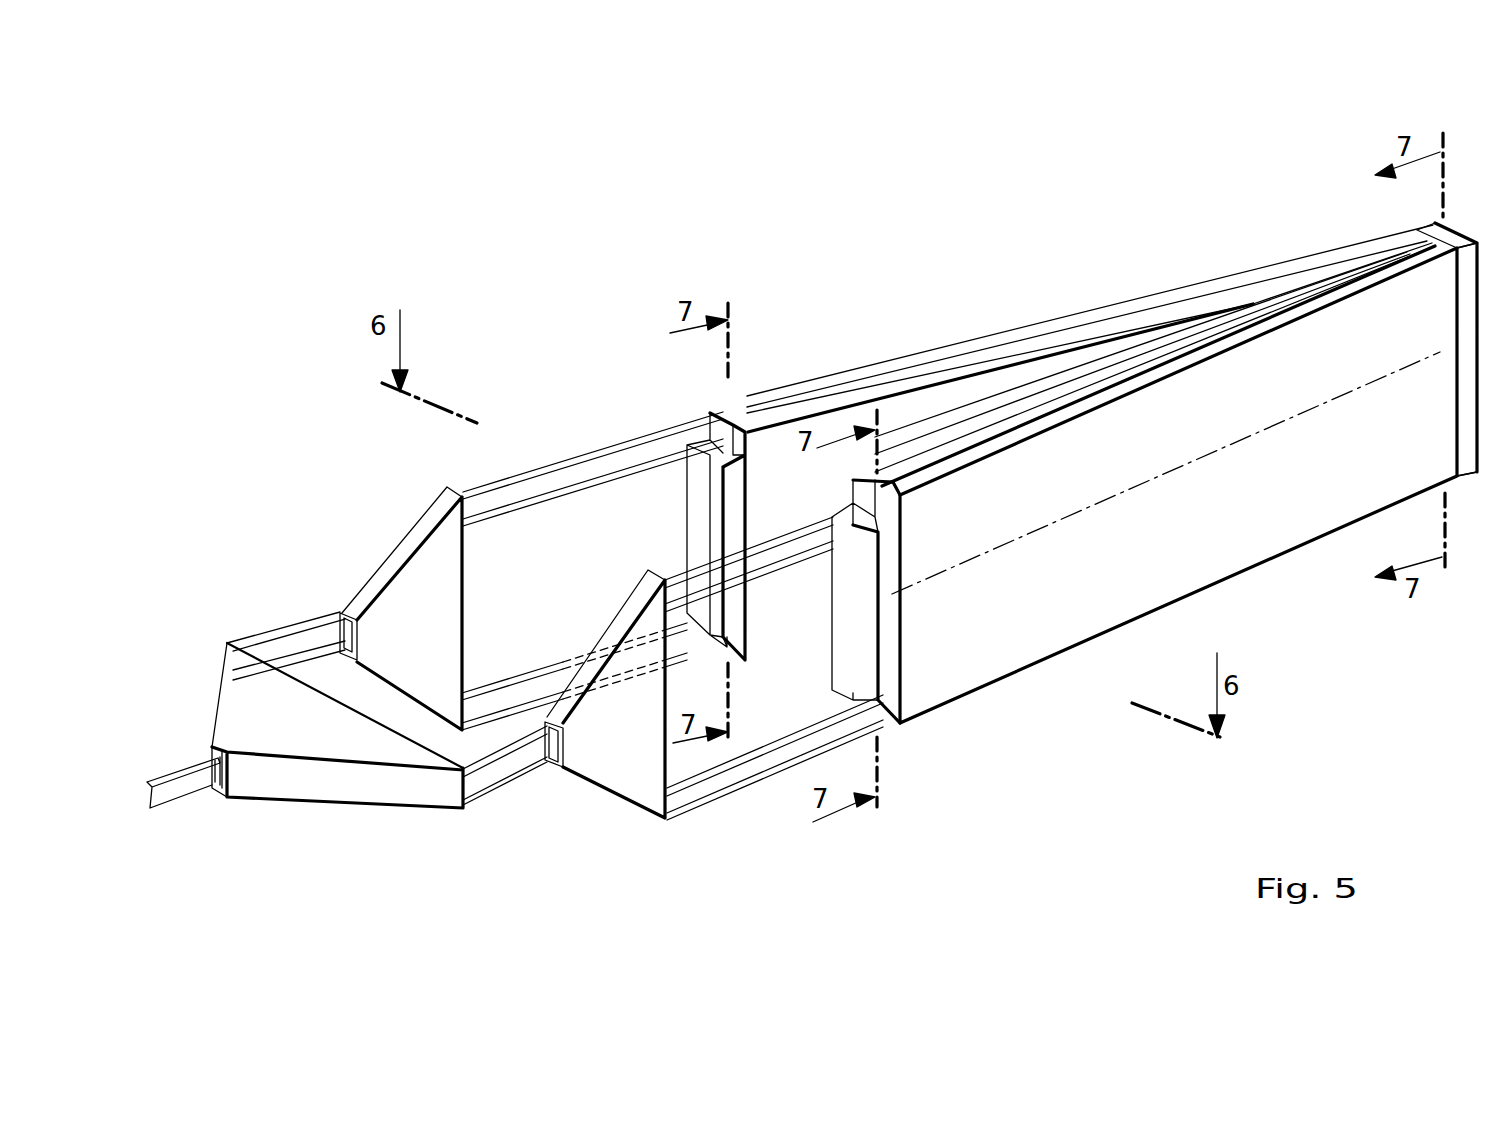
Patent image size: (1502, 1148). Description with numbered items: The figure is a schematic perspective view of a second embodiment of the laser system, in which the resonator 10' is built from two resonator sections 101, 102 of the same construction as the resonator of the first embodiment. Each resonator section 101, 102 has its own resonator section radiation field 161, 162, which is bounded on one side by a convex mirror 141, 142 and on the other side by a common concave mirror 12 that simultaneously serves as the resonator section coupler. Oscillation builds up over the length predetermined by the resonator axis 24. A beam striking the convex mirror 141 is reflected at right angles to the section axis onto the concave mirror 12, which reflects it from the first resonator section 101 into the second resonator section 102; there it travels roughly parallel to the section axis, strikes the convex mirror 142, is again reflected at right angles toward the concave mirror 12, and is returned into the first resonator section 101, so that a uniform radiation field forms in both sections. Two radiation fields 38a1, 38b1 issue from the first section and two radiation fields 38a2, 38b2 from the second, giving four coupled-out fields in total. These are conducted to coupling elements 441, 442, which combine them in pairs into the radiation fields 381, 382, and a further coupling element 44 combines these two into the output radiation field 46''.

The resonator 10' is at (1188, 446).
The first resonator section 101 is at (1025, 334).
The second resonator section 102 is at (1096, 372).
The resonator section radiation field 161 is at (889, 382).
The resonator section radiation field 162 is at (990, 430).
The resonator axis 24 is at (1272, 430).
The concave mirror 12 is at (1468, 478).
The convex mirror 141 is at (698, 518).
The convex mirror 142 is at (847, 663).
The radiation field 38b1 is at (535, 486).
The radiation field 38b2 is at (782, 548).
The radiation field 38a1 is at (507, 693).
The radiation field 38a2 is at (714, 775).
The radiation field 381 is at (278, 652).
The radiation field 382 is at (493, 768).
The coupling element 441 is at (397, 597).
The coupling element 442 is at (617, 770).
The coupling element 44 is at (232, 717).
The output radiation field 46'' is at (193, 817).